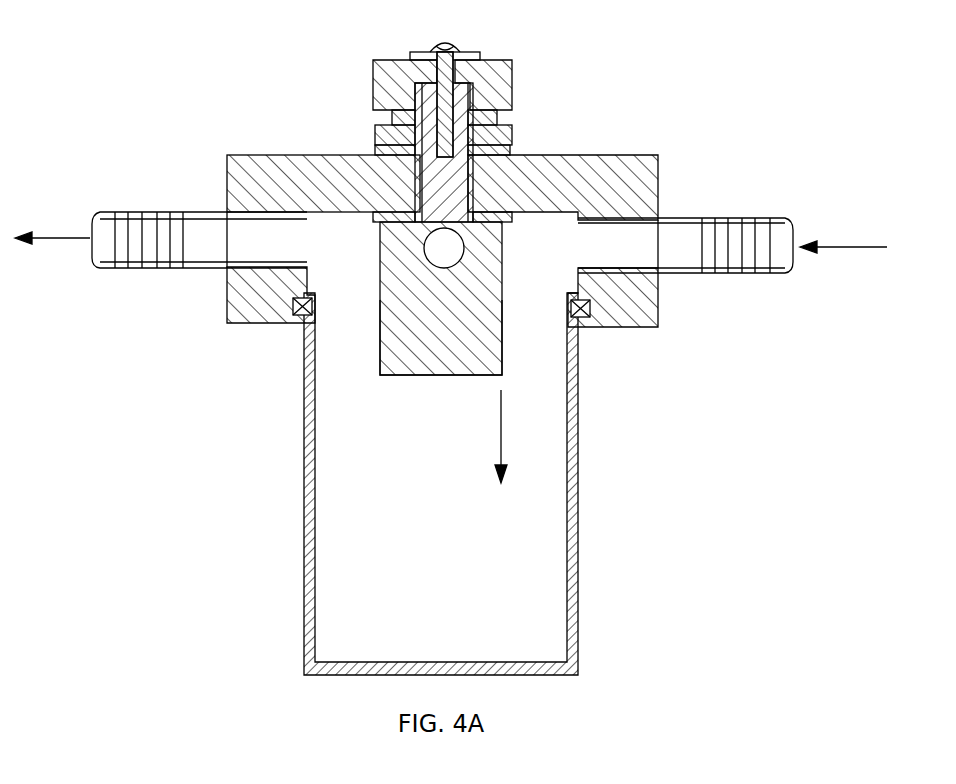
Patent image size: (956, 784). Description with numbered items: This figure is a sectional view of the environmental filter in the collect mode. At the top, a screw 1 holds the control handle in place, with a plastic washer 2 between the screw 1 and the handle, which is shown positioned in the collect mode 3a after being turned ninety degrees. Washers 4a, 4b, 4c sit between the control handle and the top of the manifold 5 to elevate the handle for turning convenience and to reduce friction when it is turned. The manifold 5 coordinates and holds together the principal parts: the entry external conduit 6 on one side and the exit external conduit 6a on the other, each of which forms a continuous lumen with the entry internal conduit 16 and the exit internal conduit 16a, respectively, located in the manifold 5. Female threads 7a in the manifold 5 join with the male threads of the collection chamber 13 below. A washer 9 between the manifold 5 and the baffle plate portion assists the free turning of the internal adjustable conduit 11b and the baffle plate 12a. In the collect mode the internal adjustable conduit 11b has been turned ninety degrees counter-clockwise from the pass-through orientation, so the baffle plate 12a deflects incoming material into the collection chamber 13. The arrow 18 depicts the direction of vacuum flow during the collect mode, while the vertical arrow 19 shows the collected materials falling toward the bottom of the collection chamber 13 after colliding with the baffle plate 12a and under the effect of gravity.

The screw 1 is at (436, 48).
The plastic washer 2 is at (462, 52).
The control handle in collect mode 3a is at (512, 80).
The washer 4a is at (392, 114).
The washer 4b is at (375, 132).
The washer 4c is at (375, 151).
The manifold 5 is at (227, 170).
The entry external conduit 6 is at (757, 218).
The exit external conduit 6a is at (135, 268).
The female threads 7a is at (293, 320).
The washer 9 is at (455, 243).
The internal adjustable conduit 11b is at (502, 236).
The baffle plate 12a is at (502, 335).
The collection chamber 13 is at (578, 518).
The entry internal conduit 16 is at (648, 245).
The exit internal conduit 16a is at (247, 245).
The arrow 18 is at (50, 238).
The vertical arrow 19 is at (501, 418).